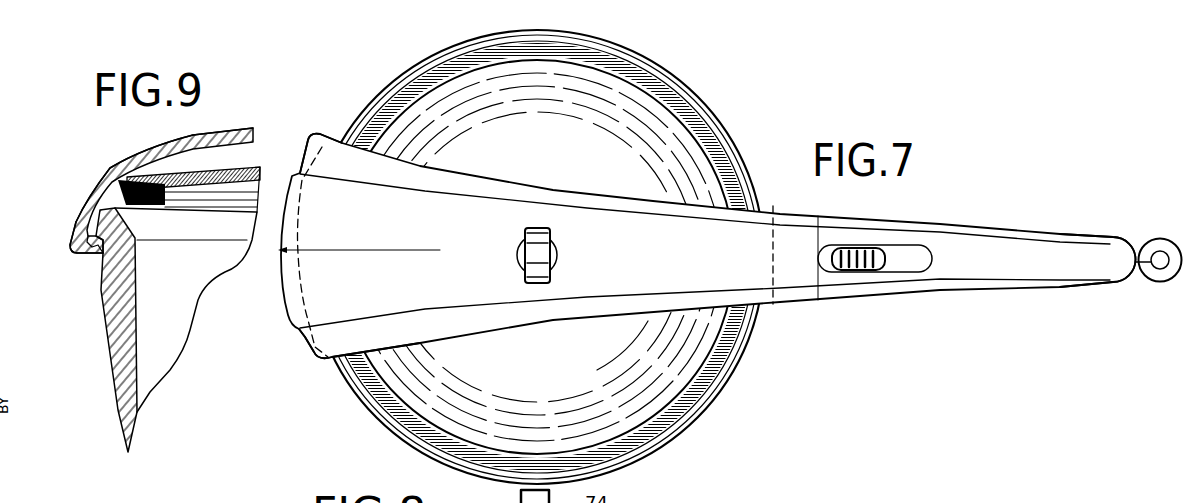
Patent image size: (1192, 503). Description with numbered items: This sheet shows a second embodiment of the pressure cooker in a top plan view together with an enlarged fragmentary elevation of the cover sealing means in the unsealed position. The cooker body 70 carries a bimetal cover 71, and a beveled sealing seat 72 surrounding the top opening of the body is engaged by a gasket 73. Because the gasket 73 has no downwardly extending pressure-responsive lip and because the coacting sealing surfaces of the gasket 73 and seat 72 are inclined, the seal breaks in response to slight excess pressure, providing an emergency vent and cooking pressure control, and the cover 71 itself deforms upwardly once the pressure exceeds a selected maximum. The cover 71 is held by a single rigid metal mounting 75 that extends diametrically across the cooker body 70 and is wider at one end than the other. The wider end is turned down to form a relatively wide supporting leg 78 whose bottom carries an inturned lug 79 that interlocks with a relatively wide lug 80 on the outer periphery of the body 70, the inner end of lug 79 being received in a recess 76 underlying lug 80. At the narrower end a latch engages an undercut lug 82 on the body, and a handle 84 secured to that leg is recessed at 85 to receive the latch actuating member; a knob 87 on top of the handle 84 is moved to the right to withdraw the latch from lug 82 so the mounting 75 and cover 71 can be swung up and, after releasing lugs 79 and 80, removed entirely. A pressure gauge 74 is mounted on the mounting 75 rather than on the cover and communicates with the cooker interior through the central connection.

In FIG. 7, the cooker body 70 is at (362, 403).
In FIG. 9, the cooker body 70 is at (101, 303).
In FIG. 7, the bimetal cover 71 is at (650, 378).
In FIG. 9, the bimetal cover 71 is at (260, 166).
In FIG. 9, the beveled sealing seat 72 is at (152, 233).
In FIG. 7, the gasket 73 is at (690, 118).
In FIG. 9, the gasket 73 is at (160, 170).
In FIG. 7, the pressure gauge 74 is at (525, 230).
In FIG. 7, the mounting 75 is at (593, 307).
In FIG. 9, the recess 76 is at (90, 187).
In FIG. 7, the supporting leg 78 is at (283, 290).
In FIG. 9, the supporting leg 78 is at (77, 192).
In FIG. 9, the inturned lug 79 is at (77, 247).
In FIG. 7, the lug 80 is at (308, 333).
In FIG. 9, the lug 80 is at (78, 217).
In FIG. 7, the undercut lug 82 is at (787, 206).
In FIG. 7, the handle 84 is at (1022, 257).
In FIG. 7, the recess 85 is at (893, 262).
In FIG. 7, the knob 87 is at (860, 250).